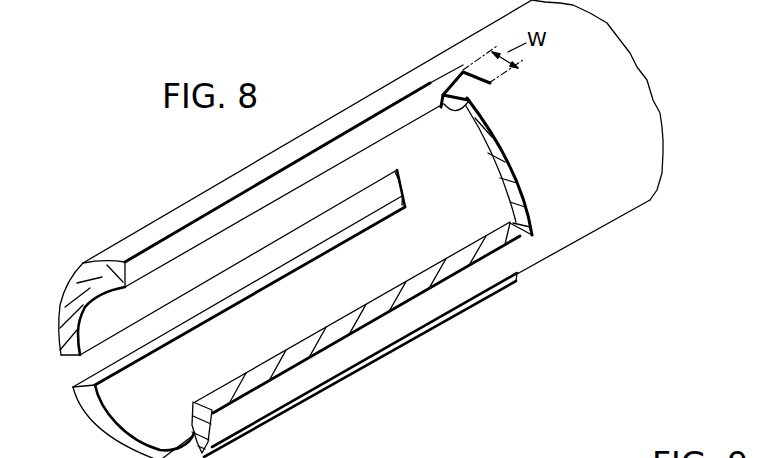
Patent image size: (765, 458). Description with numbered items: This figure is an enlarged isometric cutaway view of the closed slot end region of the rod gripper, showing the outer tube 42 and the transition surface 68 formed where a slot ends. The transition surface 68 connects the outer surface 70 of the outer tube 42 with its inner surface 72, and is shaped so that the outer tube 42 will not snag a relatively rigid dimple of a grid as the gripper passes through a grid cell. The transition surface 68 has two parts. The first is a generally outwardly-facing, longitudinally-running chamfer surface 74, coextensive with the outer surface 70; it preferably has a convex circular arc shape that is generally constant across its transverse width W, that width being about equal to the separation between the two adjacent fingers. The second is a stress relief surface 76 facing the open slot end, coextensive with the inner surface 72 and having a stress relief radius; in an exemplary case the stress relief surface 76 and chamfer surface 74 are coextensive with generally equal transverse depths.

The outer tube 42 is at (646, 147).
The transition surface 68 is at (465, 66).
The outer surface 70 is at (422, 315).
The inner surface 72 is at (472, 232).
The chamfer surface 74 is at (474, 88).
The stress relief surface 76 is at (444, 95).